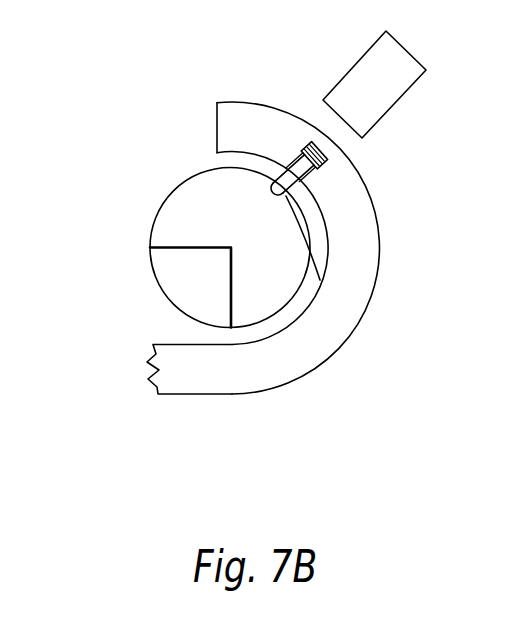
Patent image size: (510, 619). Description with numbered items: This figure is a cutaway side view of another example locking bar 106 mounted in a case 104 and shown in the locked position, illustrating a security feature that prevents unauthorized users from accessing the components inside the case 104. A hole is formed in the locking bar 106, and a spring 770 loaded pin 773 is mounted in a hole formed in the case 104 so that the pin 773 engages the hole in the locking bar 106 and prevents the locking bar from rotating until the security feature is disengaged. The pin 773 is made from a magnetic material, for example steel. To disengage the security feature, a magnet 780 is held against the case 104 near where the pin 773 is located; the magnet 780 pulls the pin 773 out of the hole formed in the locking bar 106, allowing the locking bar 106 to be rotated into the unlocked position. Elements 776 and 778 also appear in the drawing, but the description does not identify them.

The case 104 is at (265, 393).
The locking bar 106 is at (163, 201).
The spring 770 is at (322, 162).
The pin 773 is at (302, 172).
The locking pin 776 is at (301, 149).
The spring member 778 is at (320, 280).
The magnet 780 is at (352, 68).